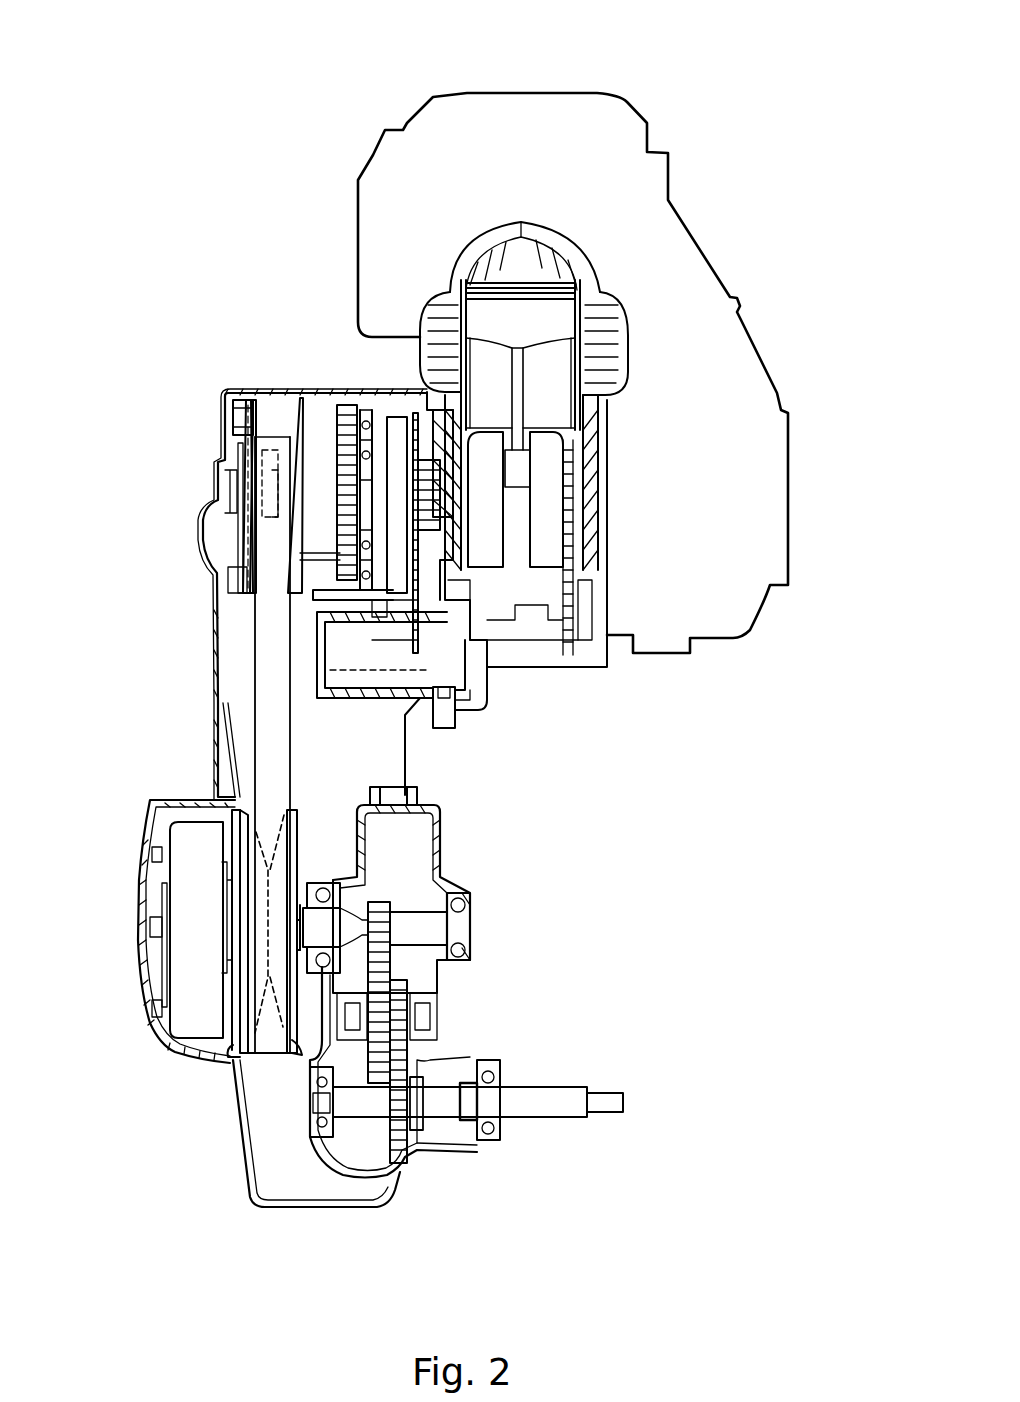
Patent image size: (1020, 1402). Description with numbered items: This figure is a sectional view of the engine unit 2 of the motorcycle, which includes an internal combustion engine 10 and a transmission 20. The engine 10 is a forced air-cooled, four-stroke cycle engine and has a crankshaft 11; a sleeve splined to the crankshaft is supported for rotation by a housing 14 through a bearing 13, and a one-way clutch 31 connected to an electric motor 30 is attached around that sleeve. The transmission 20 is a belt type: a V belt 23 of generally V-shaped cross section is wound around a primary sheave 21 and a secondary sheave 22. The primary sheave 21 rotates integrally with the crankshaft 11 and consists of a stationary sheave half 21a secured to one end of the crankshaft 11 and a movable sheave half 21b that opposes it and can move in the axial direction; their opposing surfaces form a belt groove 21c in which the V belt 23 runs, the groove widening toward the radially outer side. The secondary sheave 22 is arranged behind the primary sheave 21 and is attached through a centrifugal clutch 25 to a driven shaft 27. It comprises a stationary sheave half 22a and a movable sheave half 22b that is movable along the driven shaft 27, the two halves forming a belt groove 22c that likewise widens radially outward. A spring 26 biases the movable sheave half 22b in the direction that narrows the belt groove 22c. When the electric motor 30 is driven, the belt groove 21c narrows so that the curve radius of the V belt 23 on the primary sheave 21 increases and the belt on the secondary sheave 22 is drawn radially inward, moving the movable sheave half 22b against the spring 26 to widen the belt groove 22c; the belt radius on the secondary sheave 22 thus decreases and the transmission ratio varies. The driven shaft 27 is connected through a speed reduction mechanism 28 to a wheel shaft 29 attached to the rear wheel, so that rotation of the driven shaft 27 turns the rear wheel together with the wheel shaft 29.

The engine unit 2 is at (650, 85).
The internal combustion engine 10 is at (605, 690).
The crankshaft 11 is at (558, 493).
The bearing 13 is at (462, 432).
The housing 14 is at (362, 405).
The transmission 20 is at (222, 533).
The primary sheave 21 is at (233, 413).
The stationary sheave half 21a is at (238, 462).
The movable sheave half 21b is at (310, 398).
The belt groove 21c is at (258, 400).
The secondary sheave 22 is at (247, 1063).
The stationary sheave half 22a is at (297, 1042).
The movable sheave half 22b is at (230, 1058).
The belt groove 22c is at (278, 812).
The V belt 23 is at (286, 730).
The centrifugal clutch 25 is at (177, 910).
The spring 26 is at (223, 920).
The driven shaft 27 is at (472, 925).
The speed reduction mechanism 28 is at (392, 960).
The wheel shaft 29 is at (537, 1098).
The electric motor 30 is at (490, 695).
The one-way clutch 31 is at (400, 420).